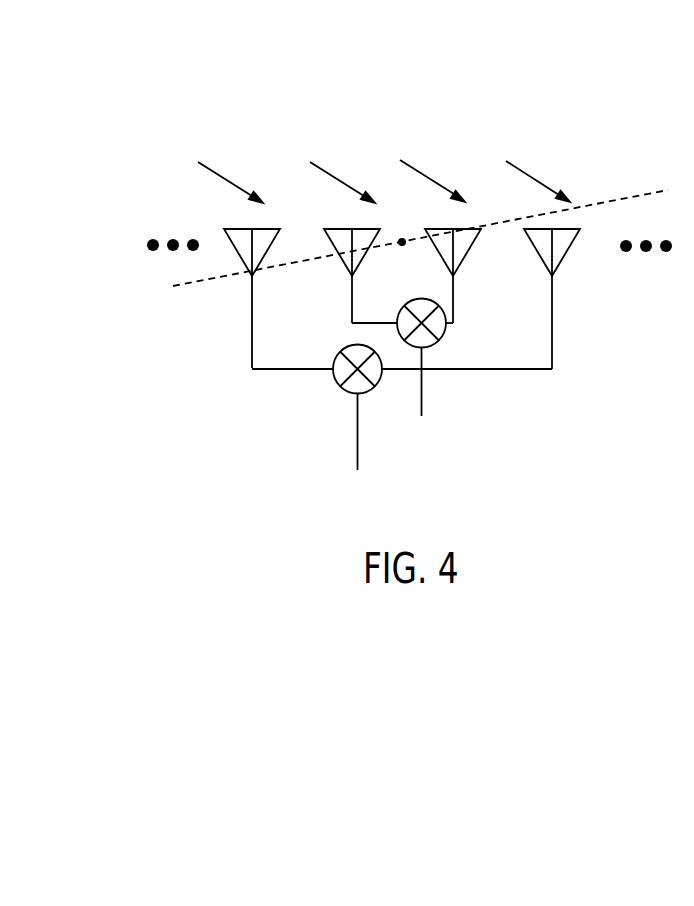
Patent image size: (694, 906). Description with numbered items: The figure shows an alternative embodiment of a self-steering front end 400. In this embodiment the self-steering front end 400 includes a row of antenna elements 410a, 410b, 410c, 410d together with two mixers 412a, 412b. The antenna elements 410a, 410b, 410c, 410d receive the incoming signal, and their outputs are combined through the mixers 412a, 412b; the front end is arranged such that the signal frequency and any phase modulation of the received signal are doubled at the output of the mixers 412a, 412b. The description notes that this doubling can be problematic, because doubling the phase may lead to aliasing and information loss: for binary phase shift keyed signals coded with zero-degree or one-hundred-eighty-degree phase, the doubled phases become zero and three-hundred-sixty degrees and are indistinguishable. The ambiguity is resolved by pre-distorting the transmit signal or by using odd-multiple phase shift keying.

The self-steering front end 400 is at (238, 90).
The antenna element 410a is at (262, 229).
The antenna element 410b is at (372, 229).
The antenna element 410c is at (461, 229).
The antenna element 410d is at (570, 229).
The mixer 412a is at (347, 393).
The mixer 412b is at (443, 335).